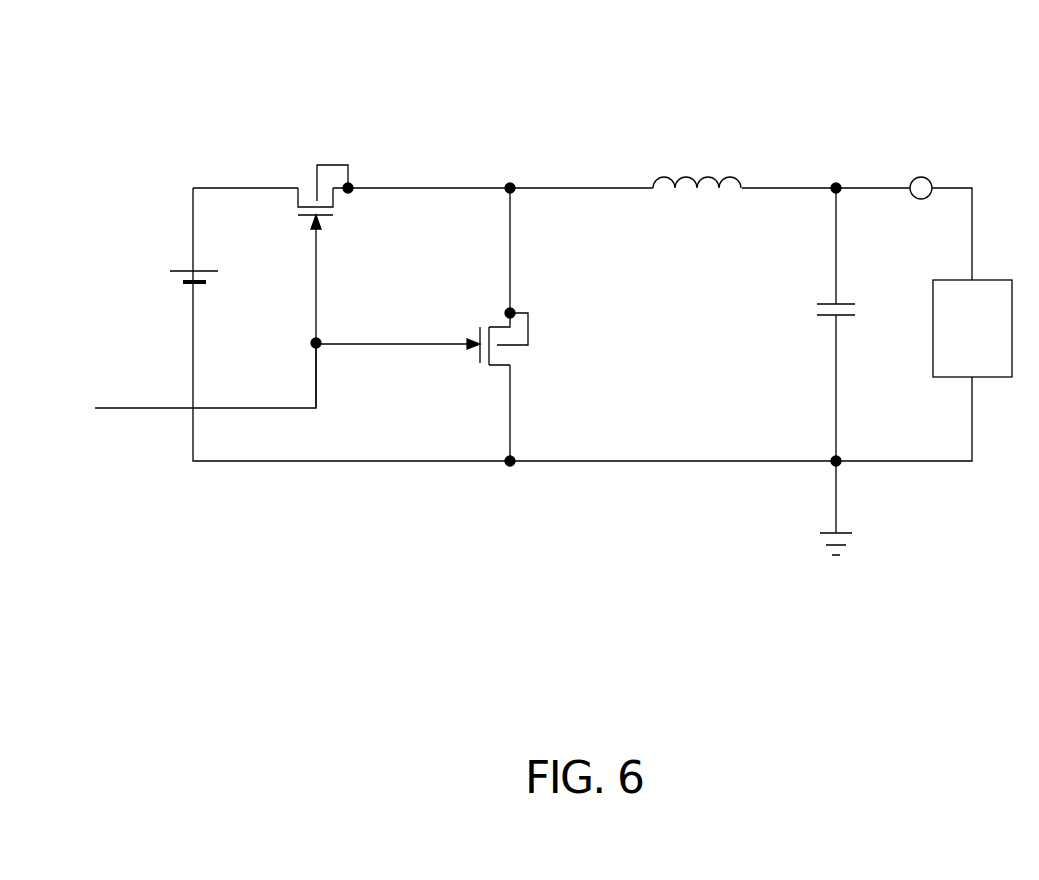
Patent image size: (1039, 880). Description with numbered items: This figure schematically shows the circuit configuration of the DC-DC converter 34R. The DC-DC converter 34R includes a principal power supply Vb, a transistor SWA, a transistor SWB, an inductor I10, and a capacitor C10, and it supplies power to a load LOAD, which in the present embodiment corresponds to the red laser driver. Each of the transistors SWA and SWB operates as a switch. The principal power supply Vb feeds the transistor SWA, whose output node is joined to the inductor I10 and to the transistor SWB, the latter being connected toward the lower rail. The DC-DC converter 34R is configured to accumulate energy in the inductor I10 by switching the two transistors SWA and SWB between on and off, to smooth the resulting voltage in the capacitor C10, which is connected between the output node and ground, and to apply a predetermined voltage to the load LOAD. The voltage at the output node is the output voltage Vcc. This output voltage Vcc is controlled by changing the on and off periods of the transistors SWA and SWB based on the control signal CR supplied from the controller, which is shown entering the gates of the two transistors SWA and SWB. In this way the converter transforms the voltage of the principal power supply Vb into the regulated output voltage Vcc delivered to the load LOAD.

The DC-DC converter 34R is at (592, 90).
The transistor SWA is at (311, 200).
The transistor SWB is at (497, 353).
The control signal CR is at (185, 378).
The principal power supply Vb is at (187, 270).
The inductor I10 is at (713, 177).
The output voltage Vcc is at (919, 176).
The capacitor C10 is at (830, 318).
The load LOAD is at (972, 328).